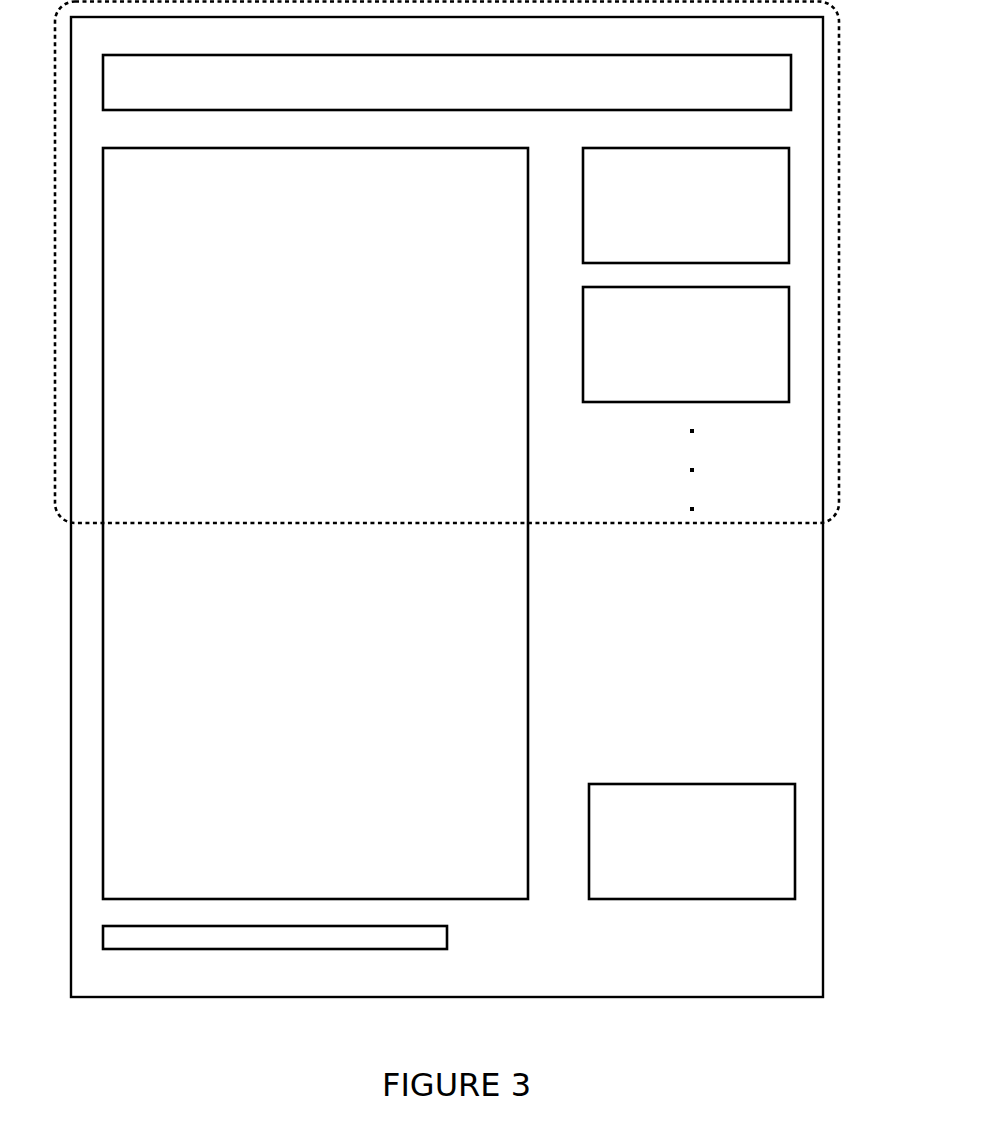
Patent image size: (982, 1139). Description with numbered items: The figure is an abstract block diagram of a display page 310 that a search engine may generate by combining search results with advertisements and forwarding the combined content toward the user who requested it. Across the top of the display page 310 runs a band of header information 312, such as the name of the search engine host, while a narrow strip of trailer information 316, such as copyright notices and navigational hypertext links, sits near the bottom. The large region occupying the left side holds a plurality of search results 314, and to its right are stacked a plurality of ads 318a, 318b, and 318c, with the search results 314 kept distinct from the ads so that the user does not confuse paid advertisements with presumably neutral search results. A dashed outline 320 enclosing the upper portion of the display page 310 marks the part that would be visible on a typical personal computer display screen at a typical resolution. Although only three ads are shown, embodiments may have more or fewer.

The display page 310 is at (443, 997).
The header information 312 is at (450, 54).
The search results 314 is at (528, 655).
The trailer information 316 is at (447, 940).
The ad 318a is at (688, 149).
The ad 318b is at (688, 288).
The ad 318c is at (692, 784).
The outline 320 is at (805, 523).